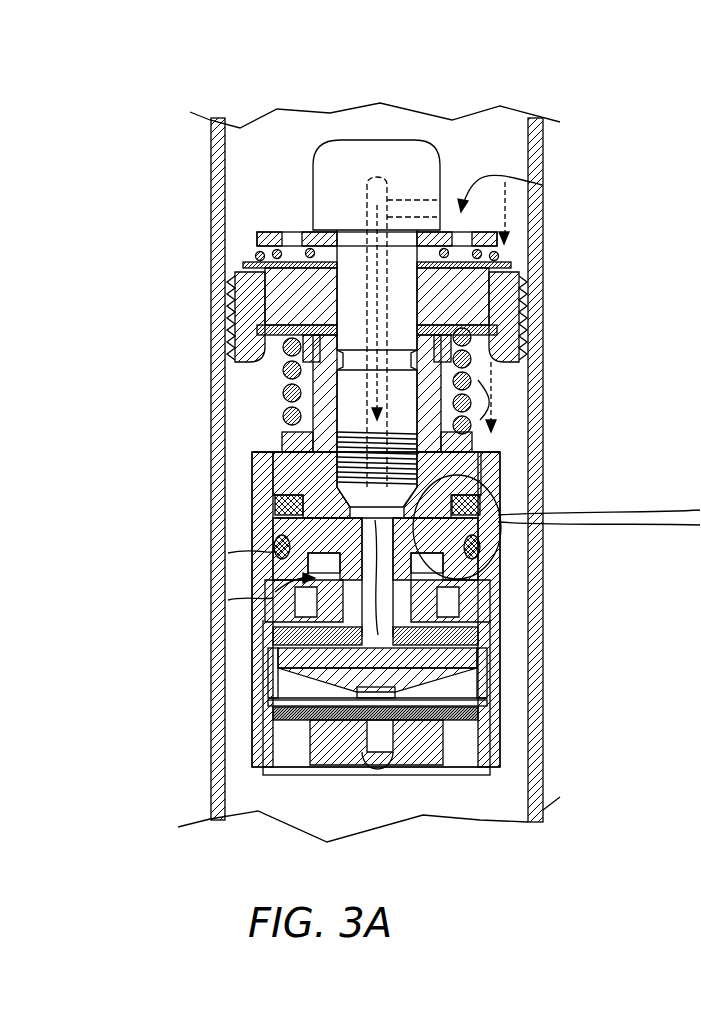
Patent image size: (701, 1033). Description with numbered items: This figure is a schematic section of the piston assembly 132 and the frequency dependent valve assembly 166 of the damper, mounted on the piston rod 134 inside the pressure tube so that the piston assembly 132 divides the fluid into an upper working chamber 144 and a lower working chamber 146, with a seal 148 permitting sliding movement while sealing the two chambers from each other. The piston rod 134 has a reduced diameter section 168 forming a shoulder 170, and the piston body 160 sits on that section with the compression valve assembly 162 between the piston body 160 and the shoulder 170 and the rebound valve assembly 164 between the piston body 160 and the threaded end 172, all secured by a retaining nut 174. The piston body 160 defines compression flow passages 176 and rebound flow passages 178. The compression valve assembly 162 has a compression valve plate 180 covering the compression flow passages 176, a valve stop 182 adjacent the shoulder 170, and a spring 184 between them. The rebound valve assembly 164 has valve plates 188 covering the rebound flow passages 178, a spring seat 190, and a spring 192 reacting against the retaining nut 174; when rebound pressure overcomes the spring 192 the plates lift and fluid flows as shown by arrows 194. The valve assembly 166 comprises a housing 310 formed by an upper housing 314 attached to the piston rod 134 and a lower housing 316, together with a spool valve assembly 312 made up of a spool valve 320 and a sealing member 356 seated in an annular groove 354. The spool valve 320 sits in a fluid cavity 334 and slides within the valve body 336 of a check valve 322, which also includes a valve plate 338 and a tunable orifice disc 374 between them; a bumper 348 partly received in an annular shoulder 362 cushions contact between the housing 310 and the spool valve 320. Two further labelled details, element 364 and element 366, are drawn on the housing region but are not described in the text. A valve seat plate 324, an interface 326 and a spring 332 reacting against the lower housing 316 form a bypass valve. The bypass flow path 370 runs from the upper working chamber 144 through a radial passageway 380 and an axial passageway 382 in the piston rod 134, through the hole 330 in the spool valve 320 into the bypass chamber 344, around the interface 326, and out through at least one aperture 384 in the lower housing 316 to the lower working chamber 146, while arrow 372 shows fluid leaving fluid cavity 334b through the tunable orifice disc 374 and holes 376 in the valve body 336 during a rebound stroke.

The piston assembly 132 is at (272, 167).
The piston rod 134 is at (400, 145).
The upper working chamber 144 is at (512, 138).
The lower working chamber 146 is at (247, 803).
The seal 148 is at (523, 332).
The piston body 160 is at (523, 308).
The compression valve assembly 162 is at (483, 225).
The rebound valve assembly 164 is at (262, 374).
The valve assembly 166 is at (240, 645).
The reduced diameter section 168 is at (290, 290).
The shoulder 170 is at (356, 300).
The threaded end 172 is at (475, 412).
The retaining nut 174 is at (300, 442).
The compression flow passages 176 is at (236, 300).
The rebound flow passages 178 is at (500, 287).
The compression valve plate 180 is at (243, 264).
The valve stop 182 is at (262, 232).
The spring 184 is at (262, 254).
The valve plates 188 is at (270, 330).
The spring seat 190 is at (282, 356).
The spring 192 is at (305, 396).
The arrows 194 is at (490, 366).
The housing 310 is at (238, 556).
The spool valve assembly 312 is at (254, 525).
The upper housing 314 is at (497, 452).
The lower housing 316 is at (430, 766).
The spool valve 320 is at (497, 460).
The check valve 322 is at (270, 582).
The valve seat plate 324 is at (497, 650).
The interface 326 is at (497, 714).
The hole 330 is at (395, 700).
The spring 332 is at (497, 752).
The fluid cavity 334 is at (480, 484).
The fluid cavity 334b is at (498, 570).
The valve body 336 is at (268, 606).
The valve plate 338 is at (480, 585).
The bypass chamber 344 is at (497, 700).
The bumper 348 is at (500, 495).
The annular groove 354 is at (498, 553).
The sealing member 356 is at (482, 548).
The annular shoulder 362 is at (270, 472).
The seal 364 is at (270, 508).
The housing upper portion 366 is at (265, 462).
The flow path 370 is at (340, 432).
The arrow 372 is at (497, 680).
The tunable orifice disc 374 is at (497, 608).
The holes 376 is at (497, 628).
The radial passageway 380 is at (420, 226).
The axial passageway 382 is at (487, 397).
The aperture 384 is at (290, 758).